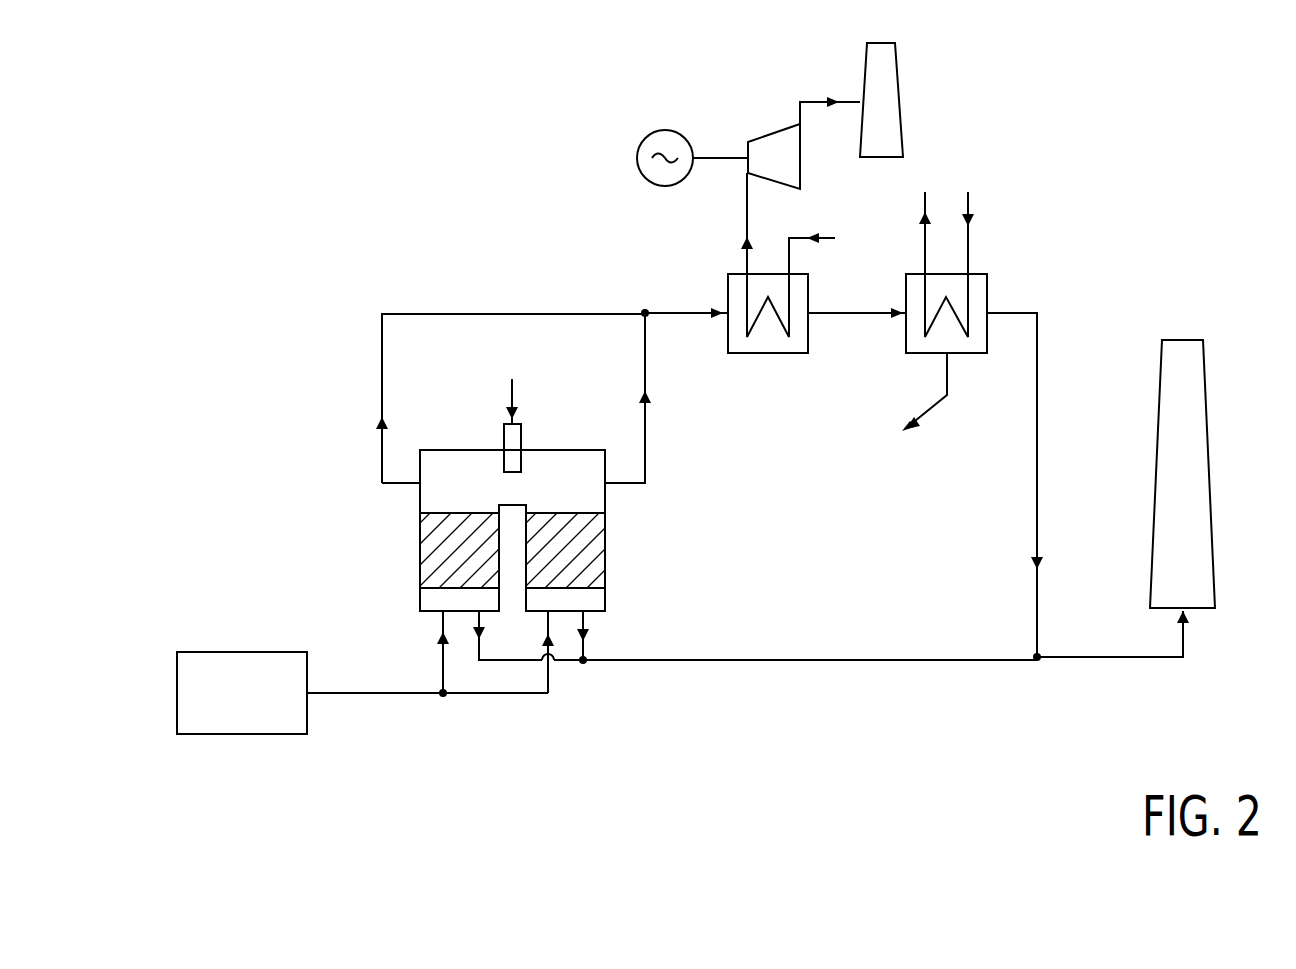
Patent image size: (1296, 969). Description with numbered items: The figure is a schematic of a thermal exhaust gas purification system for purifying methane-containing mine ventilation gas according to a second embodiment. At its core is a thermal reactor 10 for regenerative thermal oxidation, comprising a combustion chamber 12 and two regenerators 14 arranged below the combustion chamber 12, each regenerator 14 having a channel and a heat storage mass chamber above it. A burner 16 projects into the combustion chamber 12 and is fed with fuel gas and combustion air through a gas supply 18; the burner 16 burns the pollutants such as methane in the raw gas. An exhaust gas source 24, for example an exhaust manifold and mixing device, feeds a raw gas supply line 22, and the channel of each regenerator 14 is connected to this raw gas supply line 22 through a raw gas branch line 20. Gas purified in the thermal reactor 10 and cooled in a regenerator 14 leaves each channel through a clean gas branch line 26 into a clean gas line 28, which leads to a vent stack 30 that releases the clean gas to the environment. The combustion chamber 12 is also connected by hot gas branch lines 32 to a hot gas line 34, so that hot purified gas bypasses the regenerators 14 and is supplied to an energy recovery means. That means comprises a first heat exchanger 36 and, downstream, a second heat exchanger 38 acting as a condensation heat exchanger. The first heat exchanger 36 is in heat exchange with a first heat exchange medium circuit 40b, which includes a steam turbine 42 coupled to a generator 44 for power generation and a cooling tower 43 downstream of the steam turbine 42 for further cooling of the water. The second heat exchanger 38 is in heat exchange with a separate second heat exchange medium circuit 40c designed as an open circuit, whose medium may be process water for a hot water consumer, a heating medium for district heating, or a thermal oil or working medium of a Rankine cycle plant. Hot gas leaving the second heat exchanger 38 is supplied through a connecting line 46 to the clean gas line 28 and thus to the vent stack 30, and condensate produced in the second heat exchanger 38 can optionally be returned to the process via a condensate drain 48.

The thermal reactor 10 is at (616, 533).
The combustion chamber 12 is at (451, 454).
The regenerator 14 is at (430, 549).
The burner 16 is at (515, 443).
The gas supply 18 is at (515, 397).
The raw gas branch line 20 is at (442, 660).
The raw gas supply line 22 is at (377, 693).
The exhaust gas source 24 is at (240, 652).
The clean gas branch line 26 is at (482, 657).
The clean gas line 28 is at (794, 660).
The vent stack 30 is at (1160, 490).
The hot gas branch line 32 is at (382, 366).
The hot gas line 34 is at (672, 313).
The first heat exchanger 36 is at (765, 353).
The second heat exchanger 38 is at (988, 298).
The first heat exchange medium circuit 40b is at (858, 210).
The second heat exchange medium circuit 40c is at (968, 252).
The steam turbine 42 is at (768, 132).
The cooling tower 43 is at (903, 108).
The generator 44 is at (653, 133).
The connecting line 46 is at (1037, 535).
The condensate drain 48 is at (932, 408).